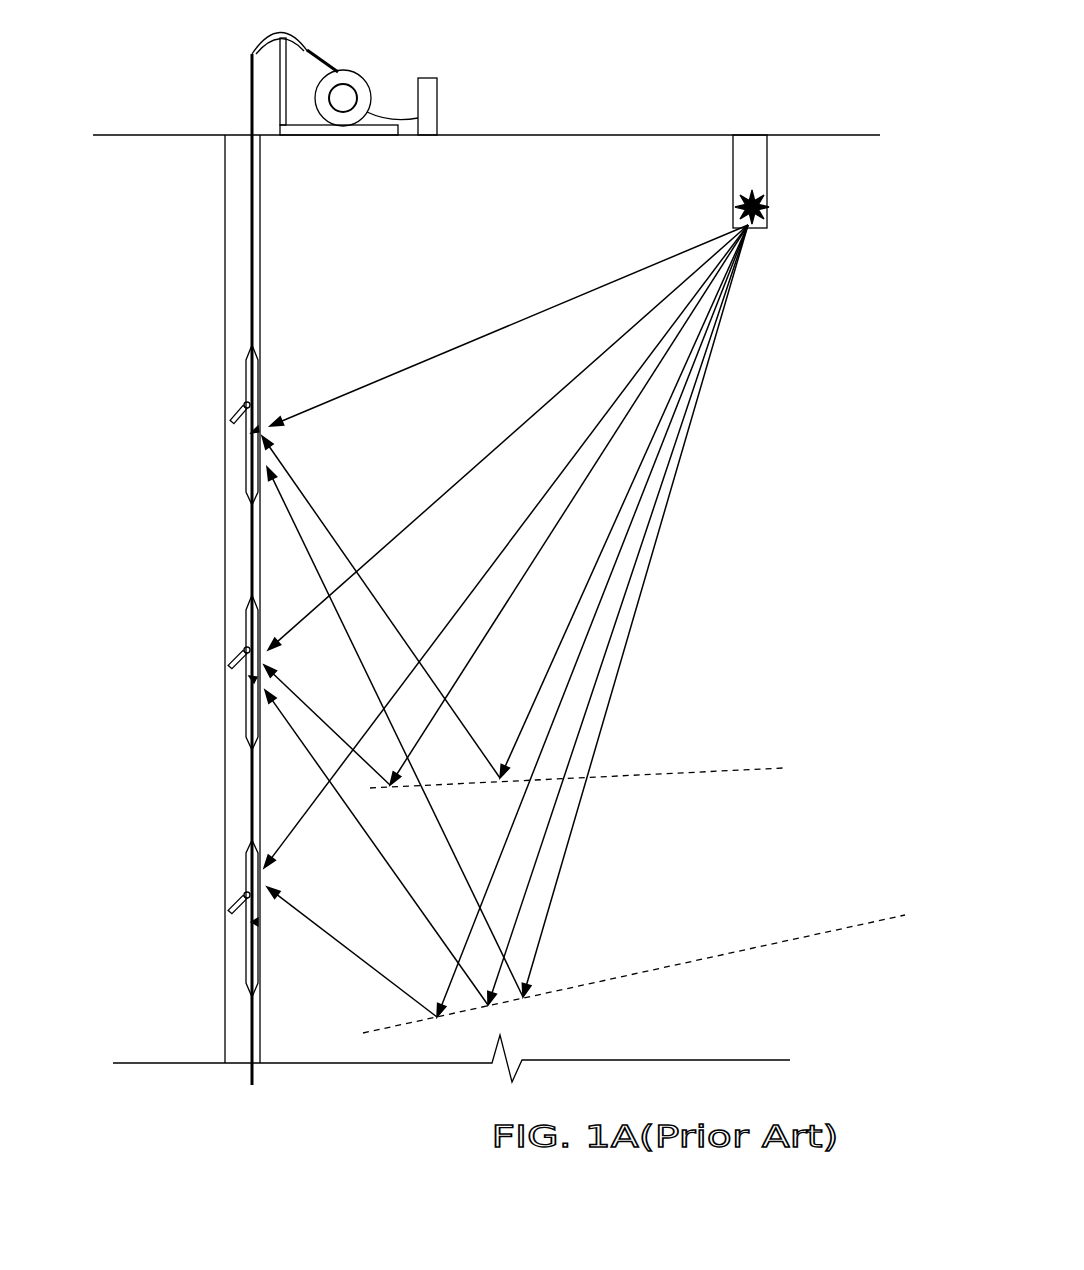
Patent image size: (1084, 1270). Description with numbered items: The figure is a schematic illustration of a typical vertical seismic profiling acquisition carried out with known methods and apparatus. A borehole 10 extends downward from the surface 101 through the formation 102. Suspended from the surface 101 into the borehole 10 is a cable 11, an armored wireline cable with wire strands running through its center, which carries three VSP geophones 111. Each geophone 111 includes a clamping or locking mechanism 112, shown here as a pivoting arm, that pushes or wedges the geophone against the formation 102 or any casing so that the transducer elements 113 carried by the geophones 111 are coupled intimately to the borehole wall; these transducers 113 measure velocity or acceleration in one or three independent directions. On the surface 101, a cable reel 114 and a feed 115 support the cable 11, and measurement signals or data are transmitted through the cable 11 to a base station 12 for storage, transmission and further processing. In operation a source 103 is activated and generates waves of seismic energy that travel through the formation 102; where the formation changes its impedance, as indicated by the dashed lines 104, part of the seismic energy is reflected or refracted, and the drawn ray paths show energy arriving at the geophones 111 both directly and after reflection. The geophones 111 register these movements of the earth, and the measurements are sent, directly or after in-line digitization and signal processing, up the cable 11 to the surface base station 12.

The borehole 10 is at (178, 300).
The cable 11 is at (252, 92).
The base station 12 is at (438, 112).
The surface 101 is at (565, 136).
The formation 102 is at (353, 465).
The source 103 is at (736, 205).
The dashed lines 104 is at (706, 772).
The VSP geophones 111 is at (247, 484).
The clamping or locking mechanism 112 is at (230, 419).
The transducer elements 113 is at (258, 428).
The cable reel 114 is at (376, 82).
The feed 115 is at (318, 44).